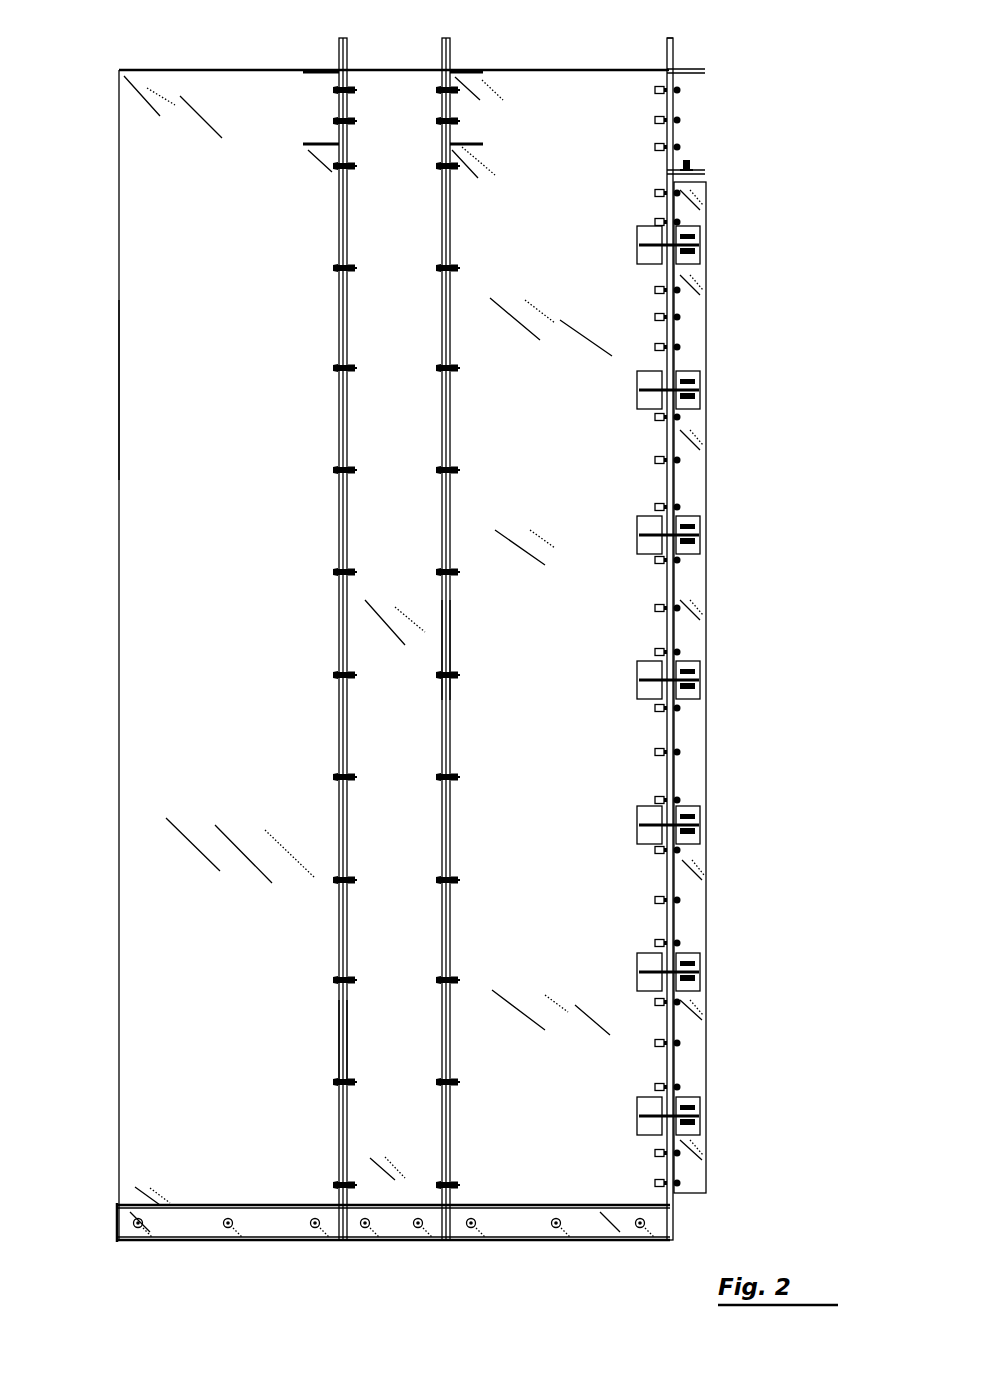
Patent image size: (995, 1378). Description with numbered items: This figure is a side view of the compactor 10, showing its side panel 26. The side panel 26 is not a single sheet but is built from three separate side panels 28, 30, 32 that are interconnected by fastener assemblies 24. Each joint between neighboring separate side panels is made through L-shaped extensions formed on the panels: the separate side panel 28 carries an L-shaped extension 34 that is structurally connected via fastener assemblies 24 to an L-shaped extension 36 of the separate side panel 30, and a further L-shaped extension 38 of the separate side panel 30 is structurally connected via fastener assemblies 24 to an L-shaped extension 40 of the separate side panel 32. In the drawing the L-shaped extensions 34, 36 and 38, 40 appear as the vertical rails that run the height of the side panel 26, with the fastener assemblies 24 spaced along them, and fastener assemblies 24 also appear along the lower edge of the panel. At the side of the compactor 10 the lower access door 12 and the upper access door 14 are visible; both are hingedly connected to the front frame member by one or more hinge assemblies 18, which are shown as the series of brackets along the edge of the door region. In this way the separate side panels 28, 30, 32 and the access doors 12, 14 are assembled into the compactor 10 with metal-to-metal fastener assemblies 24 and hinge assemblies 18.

The compactor 10 is at (772, 102).
The lower access door 12 is at (703, 892).
The upper access door 14 is at (708, 315).
The hinge assembly 18 is at (710, 232).
The fastener assembly 24 is at (325, 115).
The side panel 26 is at (268, 674).
The separate side panel 28 is at (152, 382).
The separate side panel 30 is at (400, 108).
The separate side panel 32 is at (557, 118).
The L-shaped extension 34 is at (338, 308).
The L-shaped extension 36 is at (343, 1060).
The L-shaped extension 38 is at (440, 500).
The L-shaped extension 40 is at (450, 641).